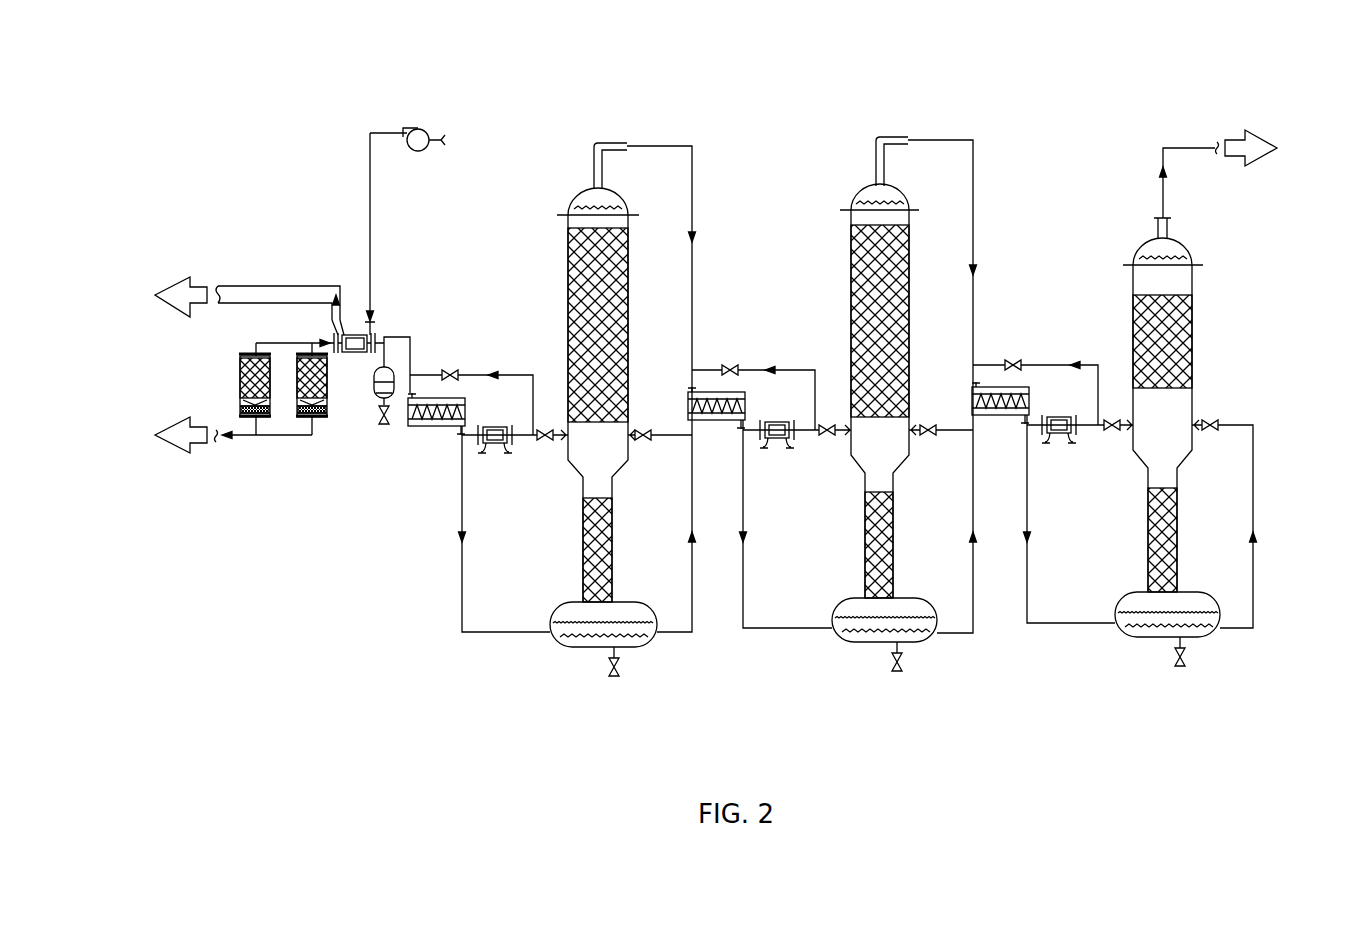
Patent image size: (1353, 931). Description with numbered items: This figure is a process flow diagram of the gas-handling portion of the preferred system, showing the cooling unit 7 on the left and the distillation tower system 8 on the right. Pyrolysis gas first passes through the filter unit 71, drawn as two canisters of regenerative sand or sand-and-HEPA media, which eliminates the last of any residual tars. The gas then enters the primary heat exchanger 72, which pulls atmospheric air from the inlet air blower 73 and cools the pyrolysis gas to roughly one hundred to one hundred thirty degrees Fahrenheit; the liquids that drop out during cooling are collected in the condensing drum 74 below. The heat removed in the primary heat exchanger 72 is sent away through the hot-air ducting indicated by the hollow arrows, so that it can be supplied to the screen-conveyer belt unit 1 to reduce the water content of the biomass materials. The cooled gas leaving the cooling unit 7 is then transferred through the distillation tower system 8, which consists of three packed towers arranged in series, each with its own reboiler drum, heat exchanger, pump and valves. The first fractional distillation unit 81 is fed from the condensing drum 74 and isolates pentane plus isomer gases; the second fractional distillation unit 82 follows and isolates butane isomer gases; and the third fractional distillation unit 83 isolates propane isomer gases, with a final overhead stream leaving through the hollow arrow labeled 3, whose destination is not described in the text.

The screen-conveyer belt unit 1 is at (181, 365).
The product gas outlet 3 is at (1247, 148).
The cooling unit 7 is at (297, 216).
The filter unit 71 is at (268, 419).
The primary heat exchanger 72 is at (367, 337).
The inlet air blower 73 is at (417, 129).
The condensing drum 74 is at (390, 400).
The distillation tower system 8 is at (863, 85).
The first fractional distillation unit 81 is at (595, 697).
The second fractional distillation unit 82 is at (897, 688).
The third fractional distillation unit 83 is at (1177, 683).